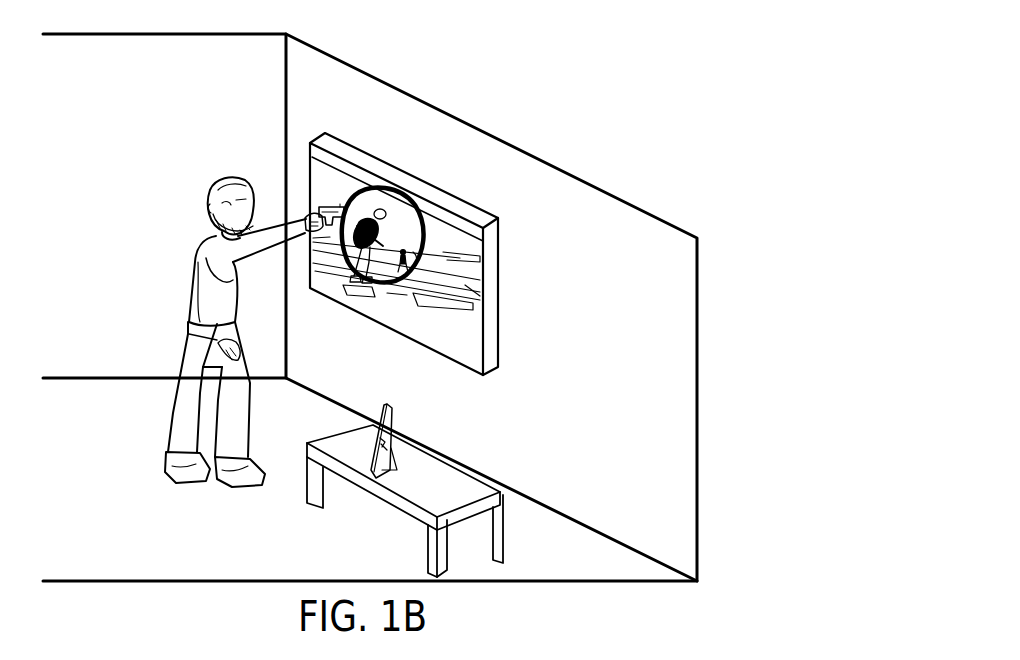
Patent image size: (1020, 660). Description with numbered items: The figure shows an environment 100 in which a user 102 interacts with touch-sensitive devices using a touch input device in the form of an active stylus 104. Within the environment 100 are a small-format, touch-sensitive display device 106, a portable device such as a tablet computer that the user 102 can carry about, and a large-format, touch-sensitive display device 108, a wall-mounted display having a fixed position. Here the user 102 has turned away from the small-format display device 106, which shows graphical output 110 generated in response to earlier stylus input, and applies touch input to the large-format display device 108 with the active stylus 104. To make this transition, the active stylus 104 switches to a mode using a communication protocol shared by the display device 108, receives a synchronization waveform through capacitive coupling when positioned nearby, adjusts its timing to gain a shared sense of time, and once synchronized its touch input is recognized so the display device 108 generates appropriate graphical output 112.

The environment 100 is at (688, 137).
The user 102 is at (196, 306).
The active stylus 104 is at (328, 205).
The small-format touch-sensitive display device 106 is at (392, 418).
The large-format touch-sensitive display device 108 is at (493, 325).
The graphical output 110 is at (396, 444).
The graphical output 112 is at (400, 190).